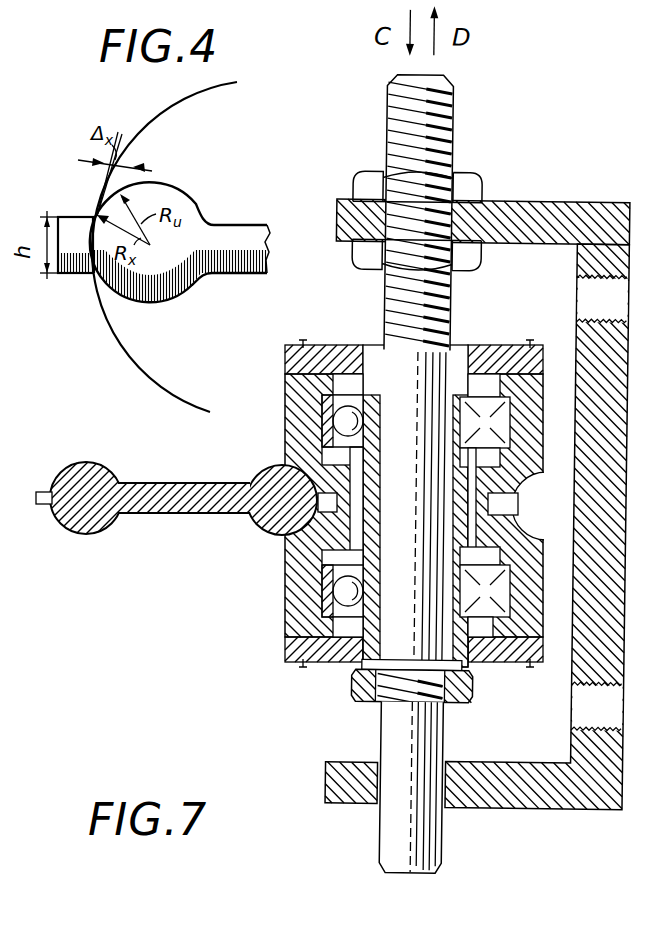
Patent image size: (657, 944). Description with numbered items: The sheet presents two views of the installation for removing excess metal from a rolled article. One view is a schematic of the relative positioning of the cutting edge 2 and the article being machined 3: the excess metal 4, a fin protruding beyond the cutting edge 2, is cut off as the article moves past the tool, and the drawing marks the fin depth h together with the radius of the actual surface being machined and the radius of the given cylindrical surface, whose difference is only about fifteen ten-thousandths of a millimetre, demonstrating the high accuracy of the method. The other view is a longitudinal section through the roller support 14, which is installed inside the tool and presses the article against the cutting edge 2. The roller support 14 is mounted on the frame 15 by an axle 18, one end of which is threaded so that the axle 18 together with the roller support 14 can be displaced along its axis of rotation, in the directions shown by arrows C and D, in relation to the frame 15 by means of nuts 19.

In FIG. 4, the cutting edge 2 is at (165, 391).
In FIG. 4, the article being machined 3 is at (245, 274).
In FIG. 7, the article being machined 3 is at (177, 514).
In FIG. 4, the excess metal 4 is at (75, 276).
In FIG. 7, the excess metal 4 is at (47, 505).
In FIG. 7, the roller support 14 is at (288, 603).
In FIG. 7, the frame 15 is at (495, 766).
In FIG. 7, the axle 18 is at (392, 731).
In FIG. 7, the nuts 19 is at (352, 256).